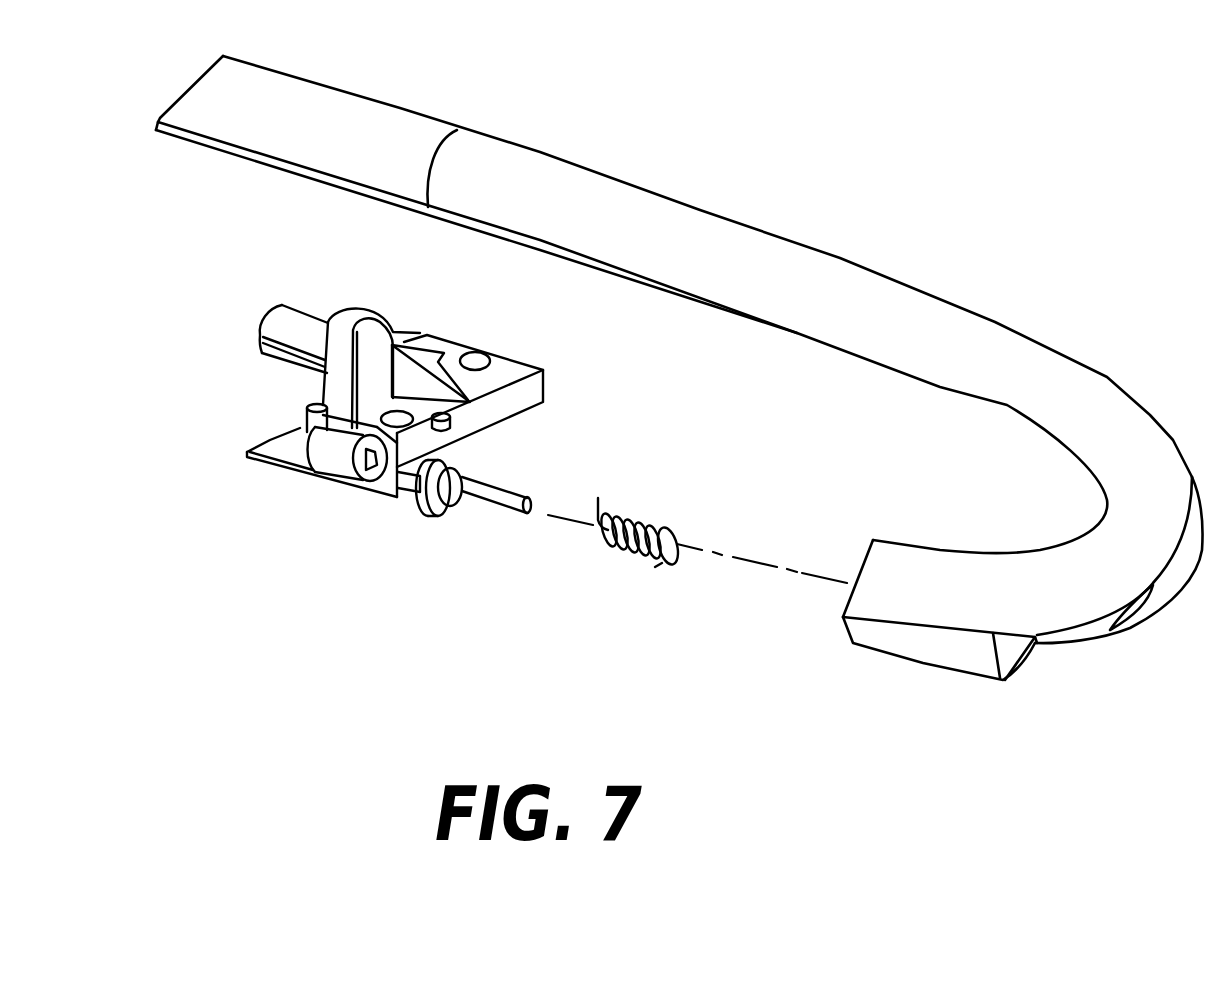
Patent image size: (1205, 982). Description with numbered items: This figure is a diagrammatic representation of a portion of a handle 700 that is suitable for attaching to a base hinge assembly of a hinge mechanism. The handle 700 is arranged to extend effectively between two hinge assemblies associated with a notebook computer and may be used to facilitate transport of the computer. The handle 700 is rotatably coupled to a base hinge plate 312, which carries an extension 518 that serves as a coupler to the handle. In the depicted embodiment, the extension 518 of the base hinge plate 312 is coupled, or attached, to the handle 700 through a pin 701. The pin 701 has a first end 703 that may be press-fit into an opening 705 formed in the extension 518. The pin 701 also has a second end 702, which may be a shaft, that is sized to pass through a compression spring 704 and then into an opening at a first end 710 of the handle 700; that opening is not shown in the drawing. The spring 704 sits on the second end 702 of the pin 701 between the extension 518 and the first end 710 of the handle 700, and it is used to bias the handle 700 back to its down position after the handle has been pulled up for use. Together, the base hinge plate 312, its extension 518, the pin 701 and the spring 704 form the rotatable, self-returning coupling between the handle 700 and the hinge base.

The handle 700 is at (995, 322).
The first end of handle 710 is at (845, 602).
The base hinge plate 312 is at (369, 504).
The extension of base hinge plate 518 is at (338, 472).
The opening 705 is at (367, 467).
The pin 701 is at (493, 559).
The first end of pin 703 is at (412, 485).
The second end of pin 702 is at (504, 510).
The compression spring 704 is at (666, 524).